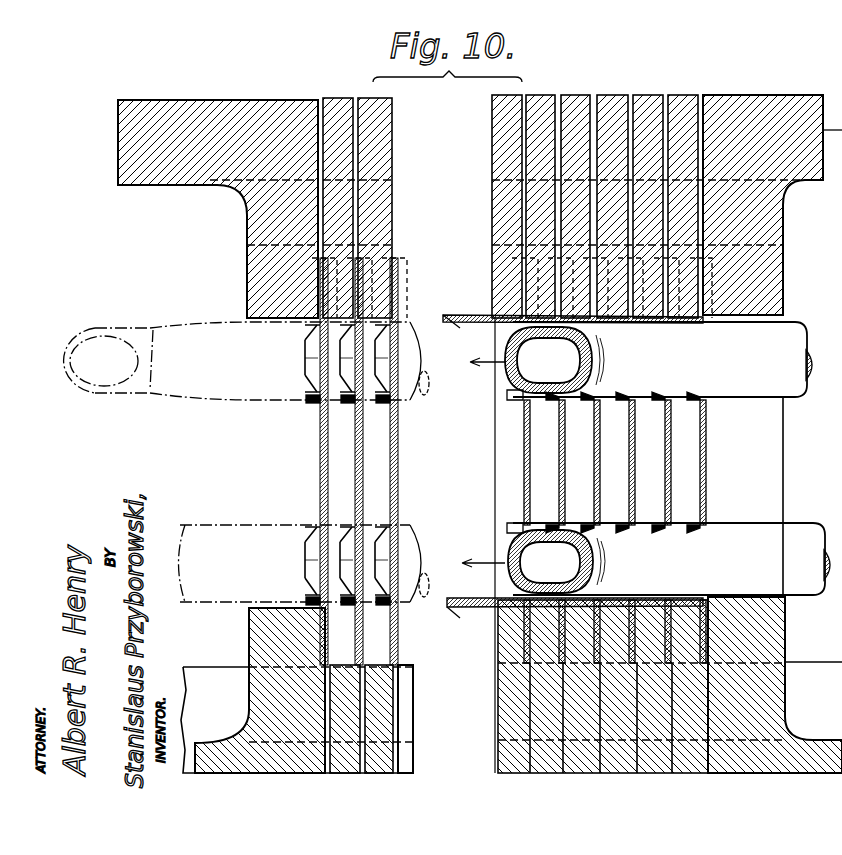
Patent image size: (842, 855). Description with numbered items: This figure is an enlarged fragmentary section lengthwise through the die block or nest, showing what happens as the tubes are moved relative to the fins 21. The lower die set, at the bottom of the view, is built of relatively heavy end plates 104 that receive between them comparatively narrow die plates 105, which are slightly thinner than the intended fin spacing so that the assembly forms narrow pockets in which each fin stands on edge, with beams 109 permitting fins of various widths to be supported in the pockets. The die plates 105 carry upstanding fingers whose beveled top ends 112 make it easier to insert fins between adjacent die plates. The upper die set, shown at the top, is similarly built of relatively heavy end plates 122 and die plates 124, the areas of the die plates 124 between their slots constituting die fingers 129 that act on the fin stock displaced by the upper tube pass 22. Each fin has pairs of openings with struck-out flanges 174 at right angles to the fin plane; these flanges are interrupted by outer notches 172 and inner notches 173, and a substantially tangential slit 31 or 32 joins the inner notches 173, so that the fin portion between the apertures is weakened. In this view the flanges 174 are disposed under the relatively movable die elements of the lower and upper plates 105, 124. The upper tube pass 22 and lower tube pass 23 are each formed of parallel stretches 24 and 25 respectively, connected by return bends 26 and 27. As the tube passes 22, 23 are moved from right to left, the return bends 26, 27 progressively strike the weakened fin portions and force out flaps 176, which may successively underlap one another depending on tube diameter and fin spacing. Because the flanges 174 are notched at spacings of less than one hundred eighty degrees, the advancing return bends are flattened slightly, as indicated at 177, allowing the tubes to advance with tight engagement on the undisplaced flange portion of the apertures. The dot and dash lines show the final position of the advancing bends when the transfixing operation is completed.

The end plates 122 is at (120, 143).
The die plates 124 is at (507, 130).
The beveled top ends 112 is at (468, 220).
The die fingers 129 is at (470, 252).
The flap or tongue 176 is at (445, 316).
The flattened return bend 177 is at (158, 330).
The outer notches 172 is at (312, 330).
The flanges 174 is at (312, 362).
The inner notches 173 is at (312, 393).
The slit 31 is at (360, 402).
The slit 32 is at (360, 521).
The upper tube pass 22 is at (510, 380).
The fins 21 is at (522, 462).
The lower tube pass 23 is at (512, 535).
The return bends 26 is at (575, 355).
The return bends 27 is at (578, 563).
The tube stretches 24 is at (641, 359).
The tube stretches 25 is at (646, 559).
The end plates 104 is at (265, 638).
The beams 109 is at (400, 700).
The die plates 105 is at (540, 745).